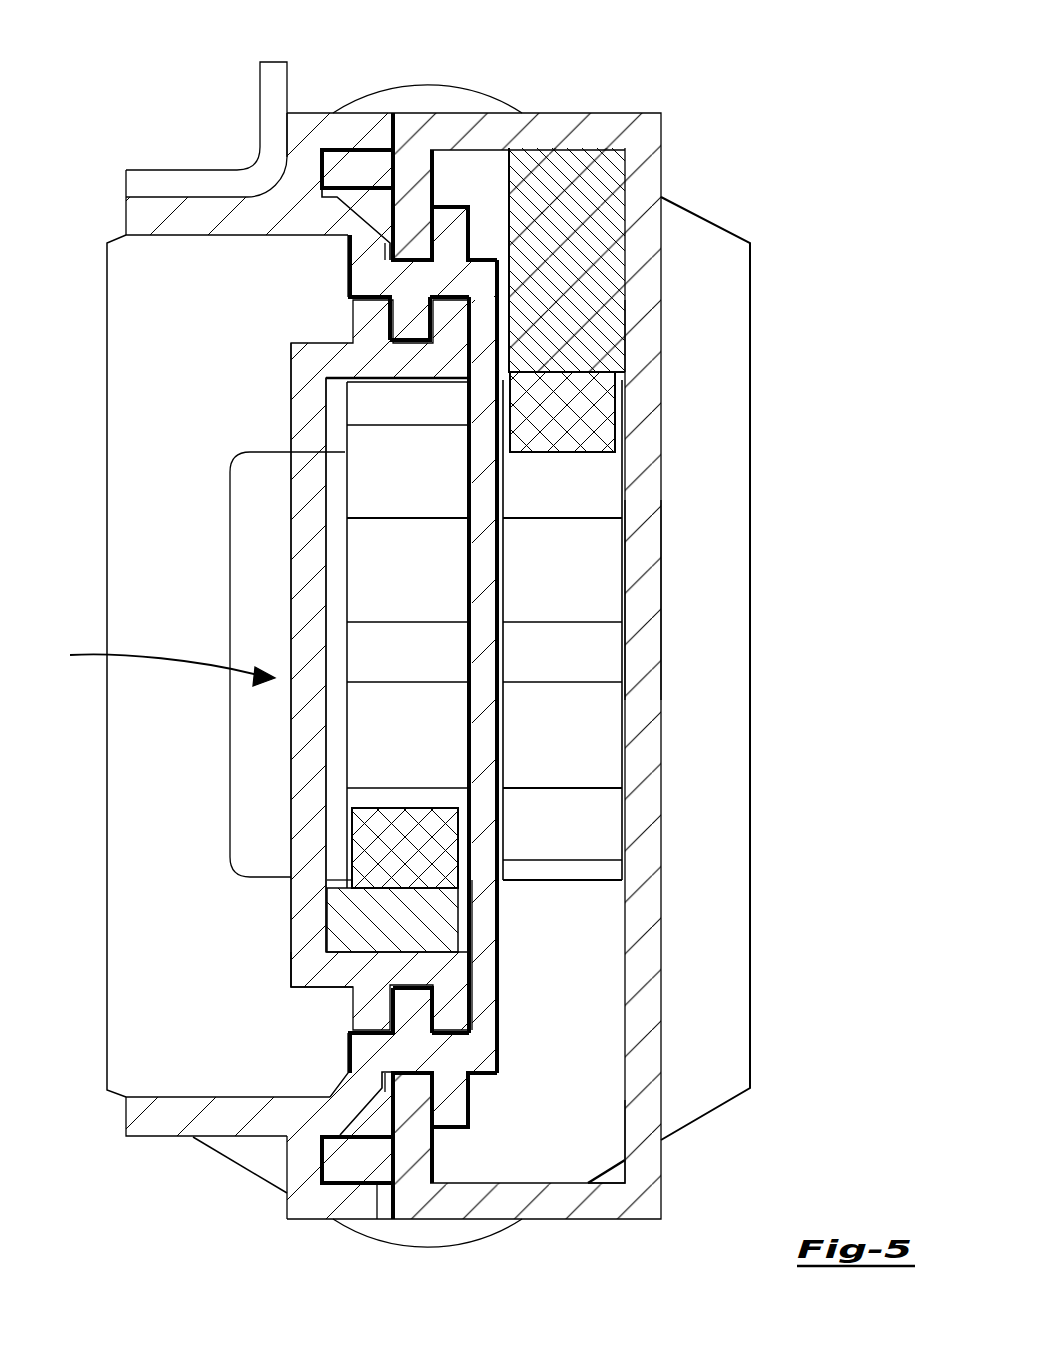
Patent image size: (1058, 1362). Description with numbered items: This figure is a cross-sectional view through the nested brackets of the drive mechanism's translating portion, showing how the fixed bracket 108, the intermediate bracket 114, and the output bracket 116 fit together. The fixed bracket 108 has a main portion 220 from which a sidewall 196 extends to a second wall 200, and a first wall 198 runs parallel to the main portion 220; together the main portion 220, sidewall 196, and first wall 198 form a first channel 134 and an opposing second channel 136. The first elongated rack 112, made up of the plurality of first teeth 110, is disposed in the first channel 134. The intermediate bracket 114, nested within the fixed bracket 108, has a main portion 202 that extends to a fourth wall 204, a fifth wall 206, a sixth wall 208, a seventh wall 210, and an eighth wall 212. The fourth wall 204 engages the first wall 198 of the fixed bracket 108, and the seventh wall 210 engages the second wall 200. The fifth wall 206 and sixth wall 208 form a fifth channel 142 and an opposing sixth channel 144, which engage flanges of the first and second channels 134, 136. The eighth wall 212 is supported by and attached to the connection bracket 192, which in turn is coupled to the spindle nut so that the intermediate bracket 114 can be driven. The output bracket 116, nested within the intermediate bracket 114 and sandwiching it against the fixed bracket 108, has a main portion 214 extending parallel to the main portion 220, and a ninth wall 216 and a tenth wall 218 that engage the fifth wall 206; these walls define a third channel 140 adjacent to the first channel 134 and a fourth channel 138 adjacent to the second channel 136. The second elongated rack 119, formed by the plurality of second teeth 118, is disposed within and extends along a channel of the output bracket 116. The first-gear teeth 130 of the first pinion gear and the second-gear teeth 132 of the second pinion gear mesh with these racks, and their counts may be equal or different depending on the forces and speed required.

The fixed bracket 108 is at (643, 592).
The first teeth 110 is at (583, 420).
The first elongated rack 112 is at (590, 345).
The intermediate bracket 114 is at (478, 655).
The output bracket 116 is at (157, 664).
The second teeth 118 is at (390, 855).
The second elongated rack 119 is at (370, 933).
The first-gear teeth 130 is at (370, 565).
The second-gear teeth 132 is at (607, 495).
The first channel 134 is at (602, 192).
The second channel 136 is at (597, 1138).
The fourth channel 138 is at (388, 997).
The third channel 140 is at (345, 345).
The fifth channel 142 is at (350, 228).
The sixth channel 144 is at (387, 1092).
The connection bracket 192 is at (263, 175).
The sidewall 196 is at (590, 128).
The first wall 198 is at (412, 205).
The second wall 200 is at (360, 162).
The main portion of intermediate bracket 202 is at (487, 928).
The fourth wall 204 is at (455, 232).
The fifth wall 206 is at (413, 323).
The sixth wall 208 is at (390, 243).
The seventh wall 210 is at (332, 127).
The eighth wall 212 is at (173, 220).
The main portion of output bracket 214 is at (303, 605).
The ninth wall 216 is at (372, 325).
The tenth wall 218 is at (455, 307).
The main portion of fixed bracket 220 is at (643, 1020).